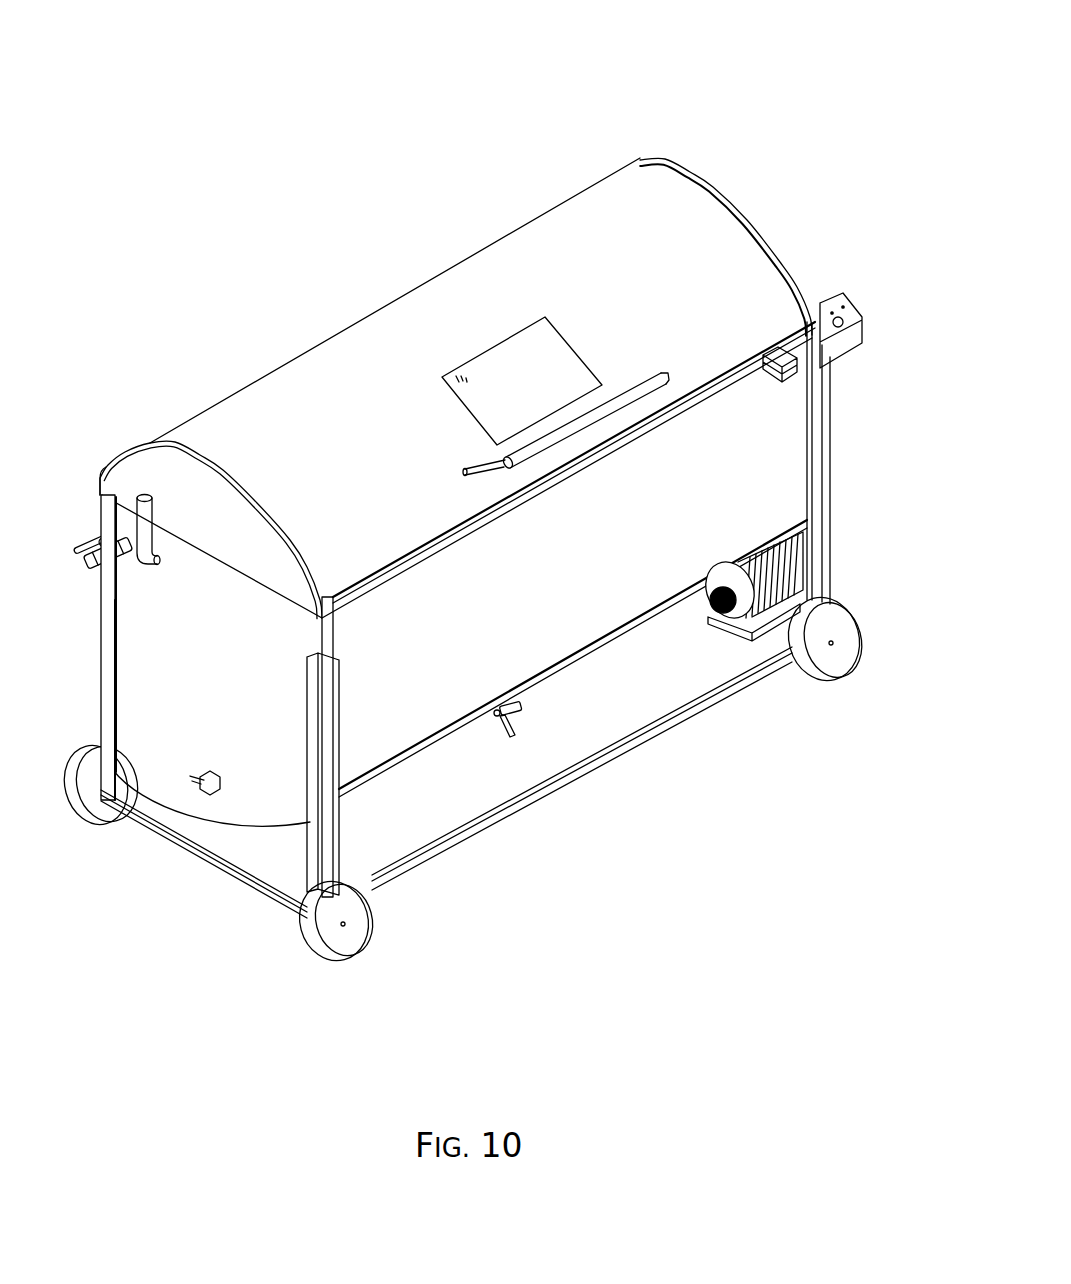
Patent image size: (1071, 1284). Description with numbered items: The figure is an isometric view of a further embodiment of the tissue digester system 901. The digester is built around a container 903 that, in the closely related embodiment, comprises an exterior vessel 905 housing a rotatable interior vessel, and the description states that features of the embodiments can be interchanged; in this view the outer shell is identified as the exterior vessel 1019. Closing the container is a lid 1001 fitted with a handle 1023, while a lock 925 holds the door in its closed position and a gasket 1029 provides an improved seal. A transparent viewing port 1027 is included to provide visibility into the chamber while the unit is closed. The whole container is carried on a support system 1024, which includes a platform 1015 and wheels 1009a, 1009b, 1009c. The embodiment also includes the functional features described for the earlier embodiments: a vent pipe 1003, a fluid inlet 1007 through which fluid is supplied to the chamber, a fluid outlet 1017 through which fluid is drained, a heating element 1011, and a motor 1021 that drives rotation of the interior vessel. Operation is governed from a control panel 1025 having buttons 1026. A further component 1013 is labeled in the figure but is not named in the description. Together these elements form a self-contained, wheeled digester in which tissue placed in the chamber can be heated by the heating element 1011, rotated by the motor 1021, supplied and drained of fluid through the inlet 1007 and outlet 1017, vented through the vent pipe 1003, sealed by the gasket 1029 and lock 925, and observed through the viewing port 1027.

The tissue digester system 901 is at (770, 87).
The container 903 is at (497, 200).
The exterior vessel 905 is at (797, 714).
The lock 925 is at (767, 383).
The lid 1001 is at (377, 310).
The vent pipe 1003 is at (140, 497).
The fluid inlet 1007 is at (90, 540).
The wheel 1009a is at (88, 745).
The wheel 1009b is at (362, 940).
The wheel 1009c is at (855, 600).
The heating element 1011 is at (208, 793).
The base rail 1013 is at (210, 860).
The platform 1015 is at (458, 823).
The fluid outlet 1017 is at (497, 720).
The exterior vessel 1019 is at (580, 653).
The motor 1021 is at (723, 622).
The handle 1023 is at (590, 425).
The support system 1024 is at (213, 1005).
The control panel 1025 is at (821, 298).
The buttons 1026 is at (845, 318).
The transparent viewing port 1027 is at (550, 393).
The gasket 1029 is at (110, 467).